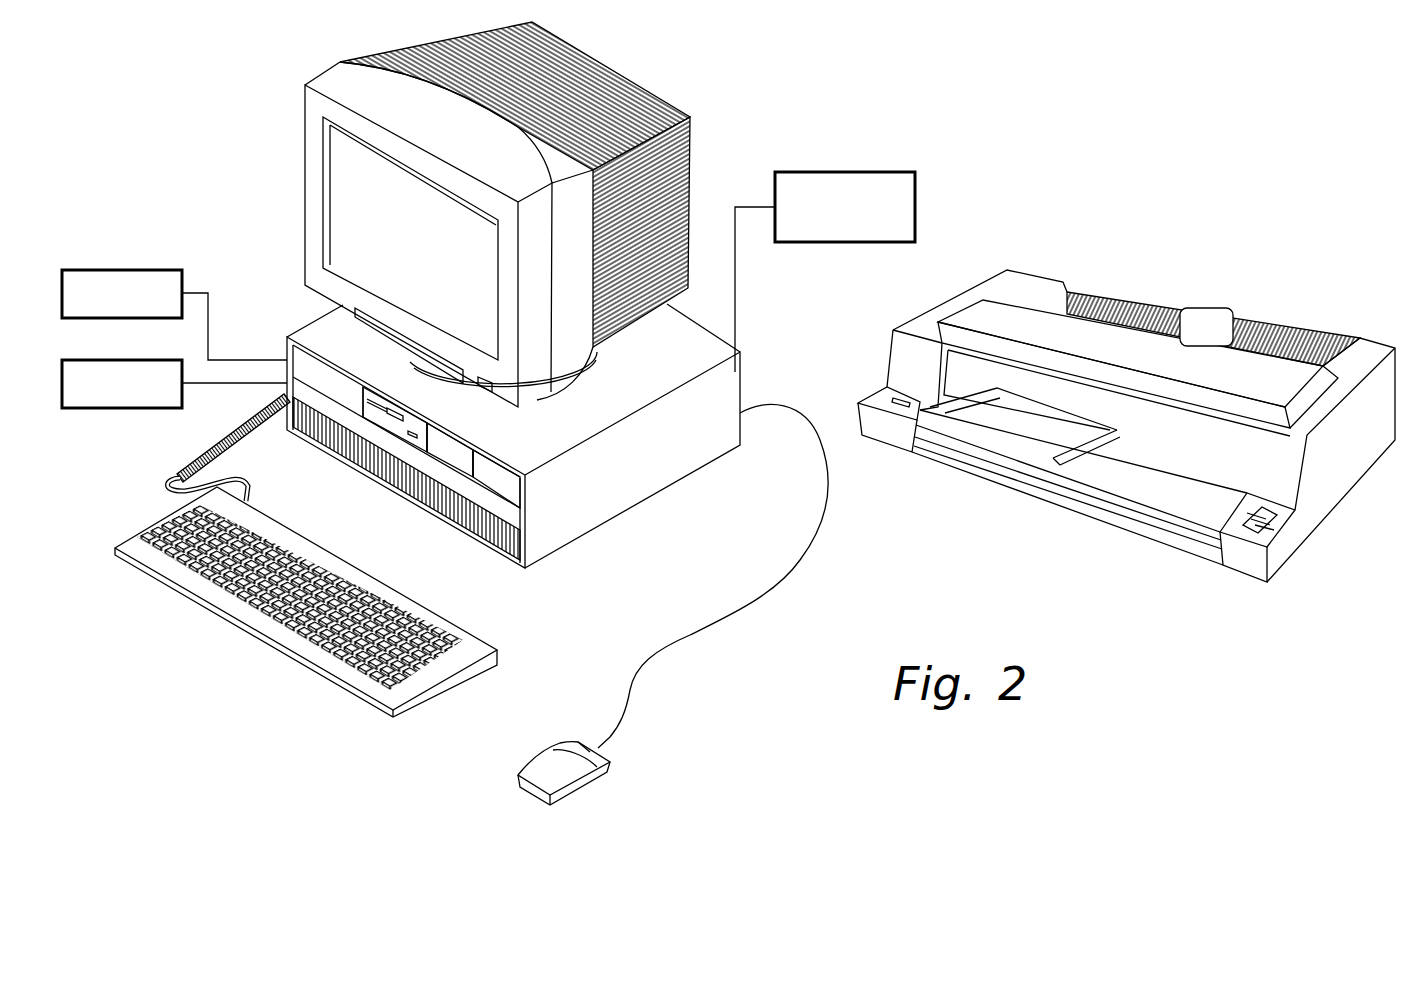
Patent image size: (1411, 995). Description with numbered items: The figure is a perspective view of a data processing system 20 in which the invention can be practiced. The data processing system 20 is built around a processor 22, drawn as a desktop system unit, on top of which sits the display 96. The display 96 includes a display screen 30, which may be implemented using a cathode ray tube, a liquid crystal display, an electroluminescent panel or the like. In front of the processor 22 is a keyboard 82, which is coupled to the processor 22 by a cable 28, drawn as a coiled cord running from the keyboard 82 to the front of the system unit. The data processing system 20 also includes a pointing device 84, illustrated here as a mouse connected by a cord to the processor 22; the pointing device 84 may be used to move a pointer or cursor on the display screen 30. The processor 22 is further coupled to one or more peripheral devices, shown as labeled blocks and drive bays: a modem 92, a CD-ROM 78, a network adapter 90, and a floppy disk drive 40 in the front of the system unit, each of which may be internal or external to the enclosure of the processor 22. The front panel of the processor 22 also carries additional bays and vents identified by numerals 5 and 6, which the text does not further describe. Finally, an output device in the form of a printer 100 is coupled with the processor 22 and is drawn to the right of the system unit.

The data processing system 20 is at (900, 72).
The processor 22 is at (539, 579).
The display 96 is at (296, 168).
The display screen 30 is at (429, 252).
The floppy disk drive 40 is at (393, 428).
The storage drive 5 is at (453, 475).
The storage drive bay 6 is at (482, 518).
The keyboard 82 is at (276, 652).
The cable 28 is at (195, 452).
The pointing device 84 is at (603, 783).
The modem 92 is at (113, 270).
The CD-ROM 78 is at (113, 360).
The network adapter 90 is at (915, 186).
The printer 100 is at (1064, 252).